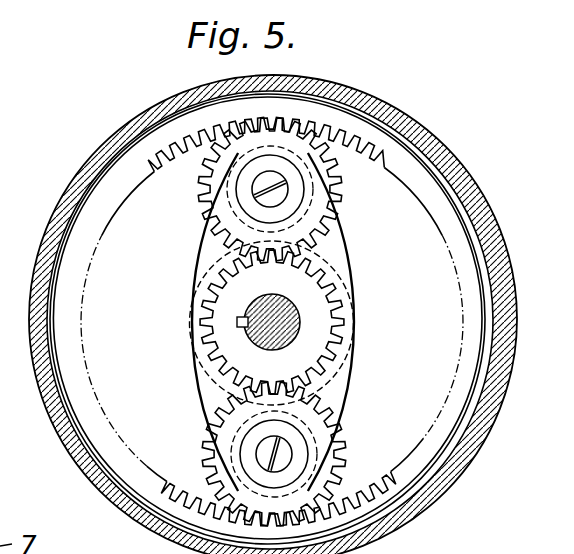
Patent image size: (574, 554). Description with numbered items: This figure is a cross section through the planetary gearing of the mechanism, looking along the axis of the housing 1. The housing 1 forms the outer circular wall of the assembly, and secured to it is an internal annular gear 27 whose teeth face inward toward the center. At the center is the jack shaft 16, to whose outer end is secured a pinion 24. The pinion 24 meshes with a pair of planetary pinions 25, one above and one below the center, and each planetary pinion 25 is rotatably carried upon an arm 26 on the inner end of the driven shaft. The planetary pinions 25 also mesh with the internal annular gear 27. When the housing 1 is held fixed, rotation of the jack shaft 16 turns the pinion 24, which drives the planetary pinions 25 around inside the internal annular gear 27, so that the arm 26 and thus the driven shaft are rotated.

The housing 1 is at (123, 127).
The internal annular gear 27 is at (354, 125).
The arm 26 is at (203, 245).
The pinion 24 is at (320, 317).
The jack shaft 16 is at (286, 284).
The planetary pinions 25 is at (314, 217).